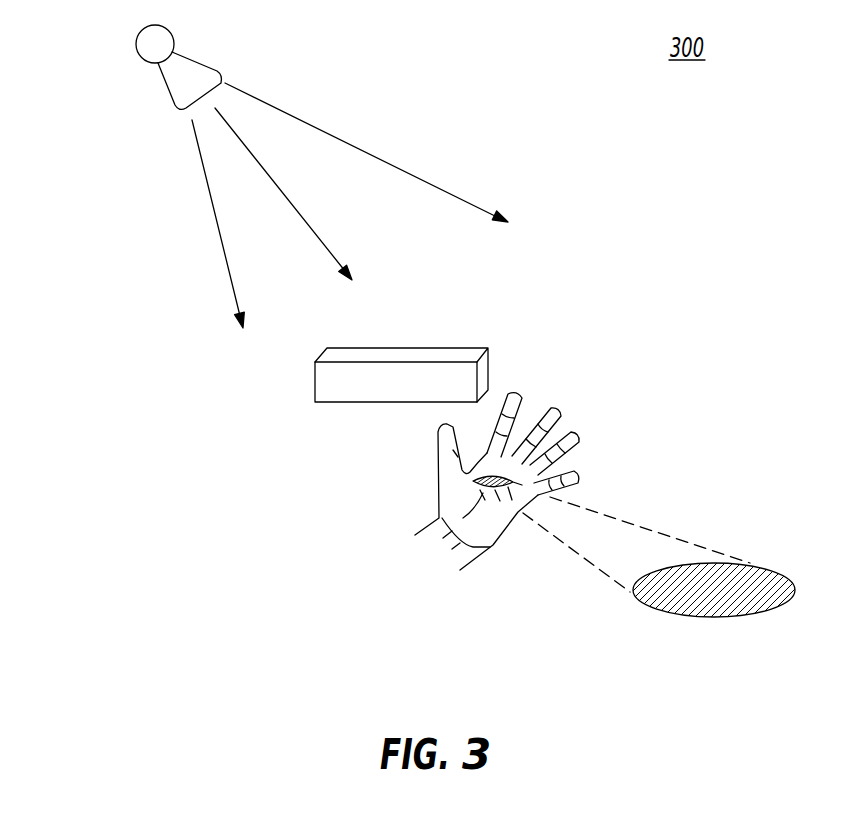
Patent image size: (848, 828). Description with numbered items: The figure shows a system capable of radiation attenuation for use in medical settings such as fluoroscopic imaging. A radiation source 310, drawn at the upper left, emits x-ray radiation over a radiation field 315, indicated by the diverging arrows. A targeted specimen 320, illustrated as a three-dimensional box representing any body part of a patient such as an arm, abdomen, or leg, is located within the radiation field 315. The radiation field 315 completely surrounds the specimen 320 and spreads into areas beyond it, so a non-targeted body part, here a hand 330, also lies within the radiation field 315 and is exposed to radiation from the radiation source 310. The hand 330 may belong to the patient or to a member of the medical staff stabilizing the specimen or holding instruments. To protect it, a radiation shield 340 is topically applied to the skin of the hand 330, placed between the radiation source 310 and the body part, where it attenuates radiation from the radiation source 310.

The radiation source 310 is at (136, 46).
The radiation field 315 is at (305, 221).
The targeted specimen 320 is at (315, 382).
The hand 330 is at (460, 500).
The radiation shield 340 is at (685, 603).